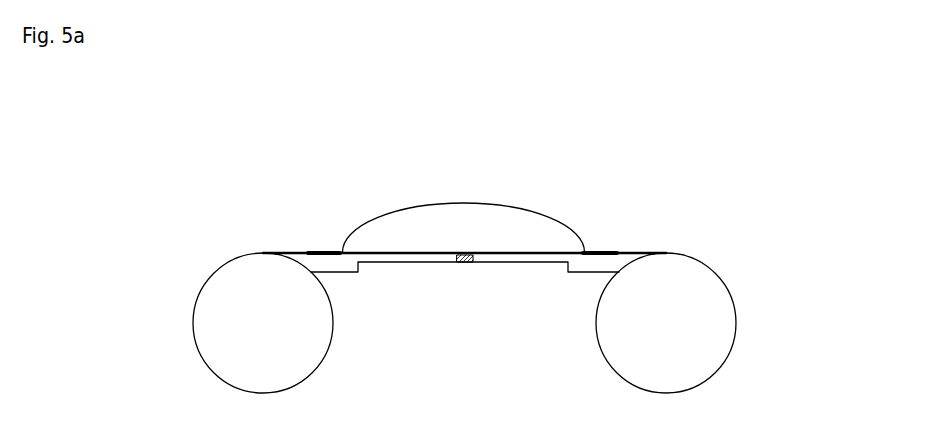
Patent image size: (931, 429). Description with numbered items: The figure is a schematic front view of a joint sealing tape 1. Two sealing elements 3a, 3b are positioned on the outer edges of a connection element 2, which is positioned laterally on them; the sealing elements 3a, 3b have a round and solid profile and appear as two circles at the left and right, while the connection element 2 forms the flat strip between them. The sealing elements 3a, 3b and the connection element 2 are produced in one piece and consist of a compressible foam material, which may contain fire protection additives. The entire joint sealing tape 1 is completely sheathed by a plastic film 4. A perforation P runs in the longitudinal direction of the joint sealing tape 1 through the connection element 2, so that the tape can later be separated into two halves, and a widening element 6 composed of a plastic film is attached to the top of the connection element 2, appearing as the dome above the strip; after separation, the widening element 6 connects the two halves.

The joint sealing tape 1 is at (331, 207).
The connection element 2 is at (532, 260).
The sealing element 3a is at (258, 320).
The sealing element 3b is at (678, 323).
The plastic film 4 is at (648, 255).
The widening element 6 is at (447, 203).
The perforation P is at (465, 263).